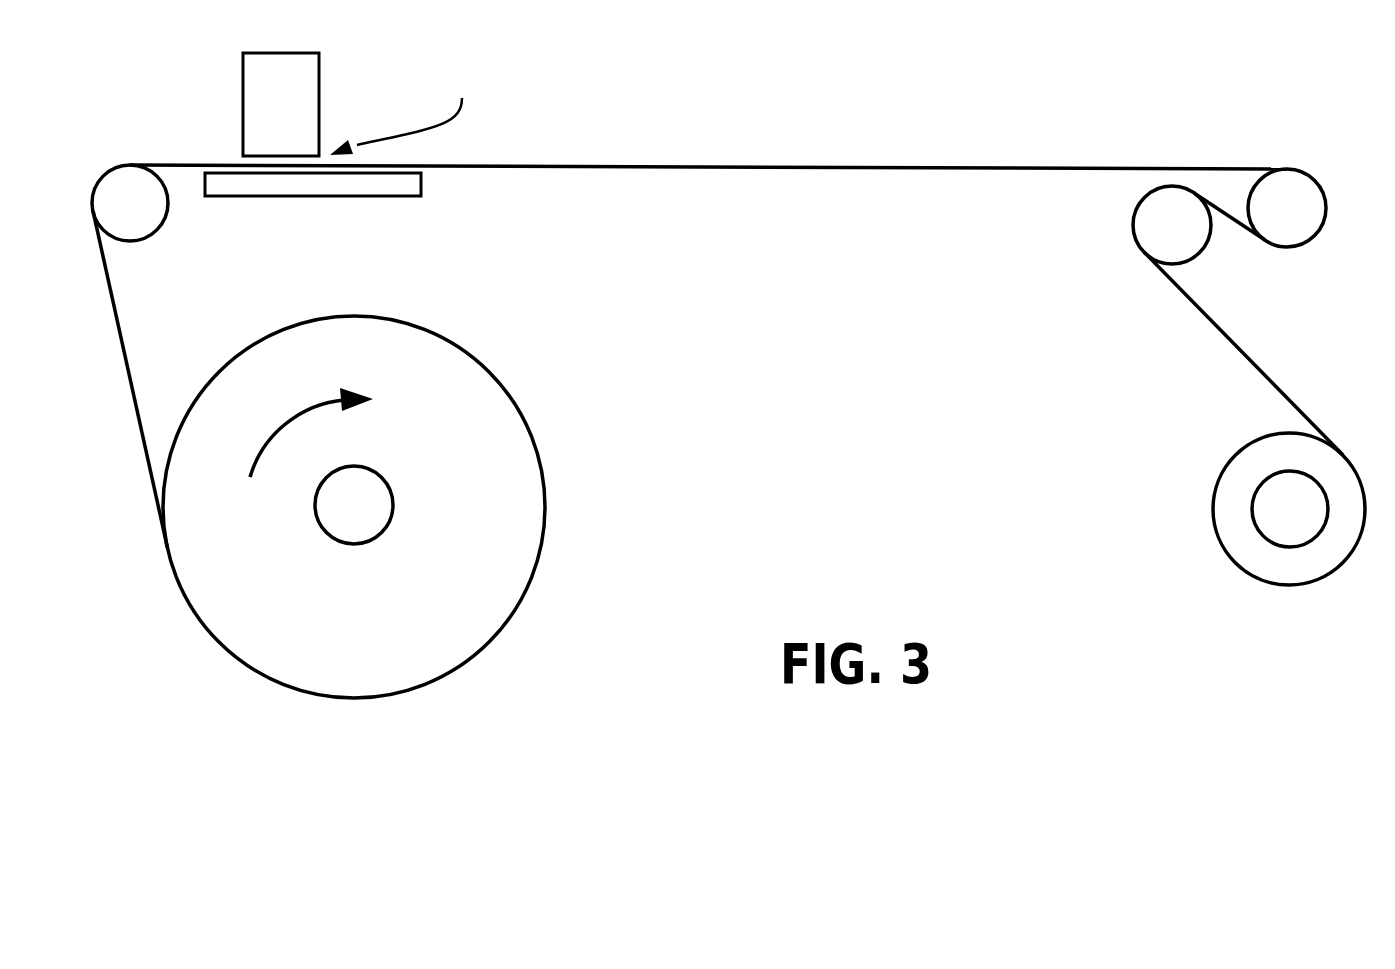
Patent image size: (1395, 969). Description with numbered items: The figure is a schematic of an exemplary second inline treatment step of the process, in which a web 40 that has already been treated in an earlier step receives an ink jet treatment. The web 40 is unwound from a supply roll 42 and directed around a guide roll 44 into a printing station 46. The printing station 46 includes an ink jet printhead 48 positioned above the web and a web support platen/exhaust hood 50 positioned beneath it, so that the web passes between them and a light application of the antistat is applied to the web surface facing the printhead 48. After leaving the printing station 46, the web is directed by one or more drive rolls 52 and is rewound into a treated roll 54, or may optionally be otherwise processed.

The web 40 is at (123, 366).
The roll 42 is at (538, 488).
The guide roll 44 is at (150, 223).
The printing station 46 is at (404, 107).
The ink jet printhead 48 is at (300, 110).
The web support platen/exhaust hood 50 is at (421, 183).
The drive roll 52 is at (1138, 243).
The treated roll 54 is at (1220, 547).